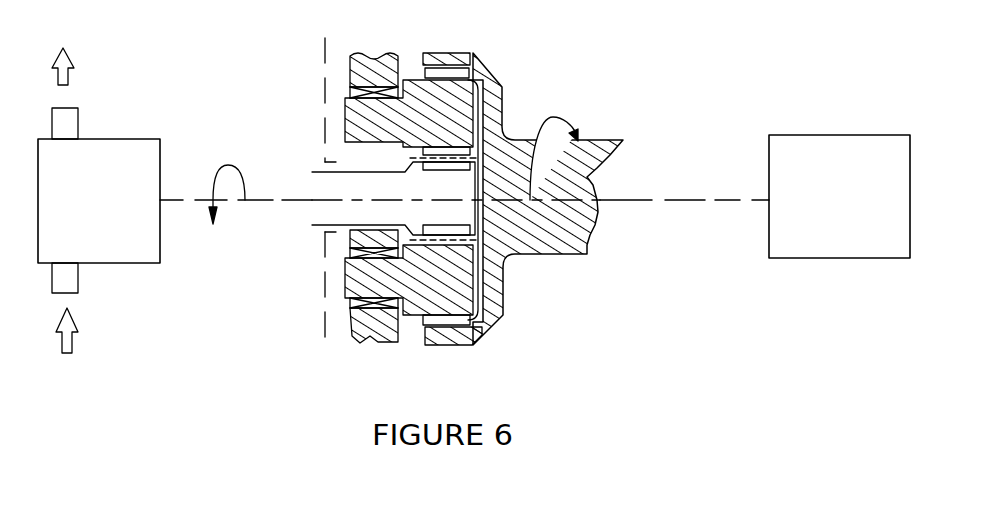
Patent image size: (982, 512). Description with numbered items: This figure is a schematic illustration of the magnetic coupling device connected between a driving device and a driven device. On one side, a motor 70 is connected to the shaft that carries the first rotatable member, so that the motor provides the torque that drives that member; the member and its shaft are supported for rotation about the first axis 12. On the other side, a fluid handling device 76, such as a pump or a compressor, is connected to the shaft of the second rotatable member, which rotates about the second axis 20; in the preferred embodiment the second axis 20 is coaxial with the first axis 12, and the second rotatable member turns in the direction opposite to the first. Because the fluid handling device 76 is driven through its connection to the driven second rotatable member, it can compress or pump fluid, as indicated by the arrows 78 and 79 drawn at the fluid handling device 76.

The first axis 12 is at (683, 197).
The second axis 20 is at (263, 200).
The motor 70 is at (793, 153).
The fluid handling device 76 is at (148, 253).
The arrow 78 is at (72, 345).
The arrow 79 is at (71, 72).